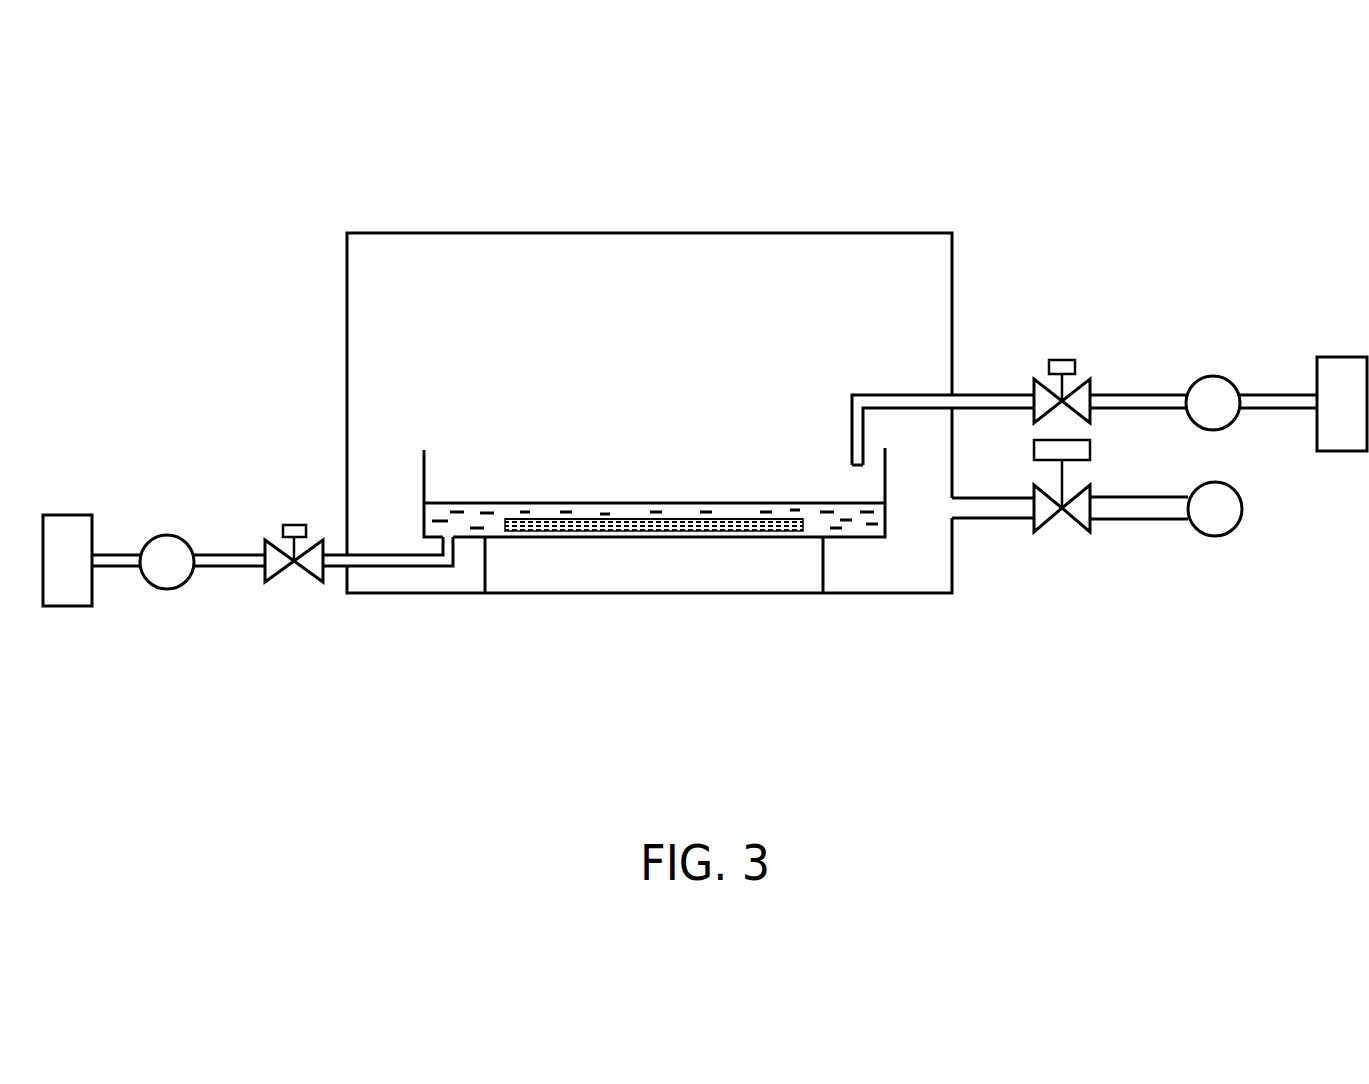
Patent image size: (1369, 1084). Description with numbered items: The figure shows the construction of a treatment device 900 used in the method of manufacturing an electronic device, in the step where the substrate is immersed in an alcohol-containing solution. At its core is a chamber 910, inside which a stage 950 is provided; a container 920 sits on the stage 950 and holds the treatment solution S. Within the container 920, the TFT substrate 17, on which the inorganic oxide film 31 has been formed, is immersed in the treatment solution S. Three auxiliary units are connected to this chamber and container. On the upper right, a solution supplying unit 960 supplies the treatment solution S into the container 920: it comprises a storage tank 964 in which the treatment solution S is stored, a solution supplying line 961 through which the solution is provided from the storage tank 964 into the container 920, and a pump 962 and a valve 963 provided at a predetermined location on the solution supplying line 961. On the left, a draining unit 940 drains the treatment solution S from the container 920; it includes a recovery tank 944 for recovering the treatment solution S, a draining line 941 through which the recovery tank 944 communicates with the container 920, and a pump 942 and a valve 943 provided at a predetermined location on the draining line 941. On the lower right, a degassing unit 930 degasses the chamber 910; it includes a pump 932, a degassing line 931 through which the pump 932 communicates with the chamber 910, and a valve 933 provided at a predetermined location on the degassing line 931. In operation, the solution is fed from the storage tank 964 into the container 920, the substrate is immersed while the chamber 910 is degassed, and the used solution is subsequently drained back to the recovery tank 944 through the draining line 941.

The treatment device 900 is at (1033, 216).
The chamber 910 is at (952, 318).
The container 920 is at (424, 470).
The inorganic oxide film 31 is at (598, 522).
The TFT substrate 17 is at (553, 531).
The treatment solution S is at (852, 518).
The stage 950 is at (665, 577).
The draining unit 940 is at (358, 680).
The draining line 941 is at (345, 568).
The pump 942 is at (167, 589).
The valve 943 is at (270, 583).
The recovery tank 944 is at (67, 598).
The solution supplying unit 960 is at (1345, 305).
The solution supplying line 961 is at (1142, 403).
The pump 962 is at (1217, 378).
The valve 963 is at (1092, 395).
The storage tank 964 is at (1333, 370).
The degassing unit 930 is at (1218, 605).
The degassing line 931 is at (998, 520).
The pump 932 is at (1193, 532).
The valve 933 is at (1075, 530).